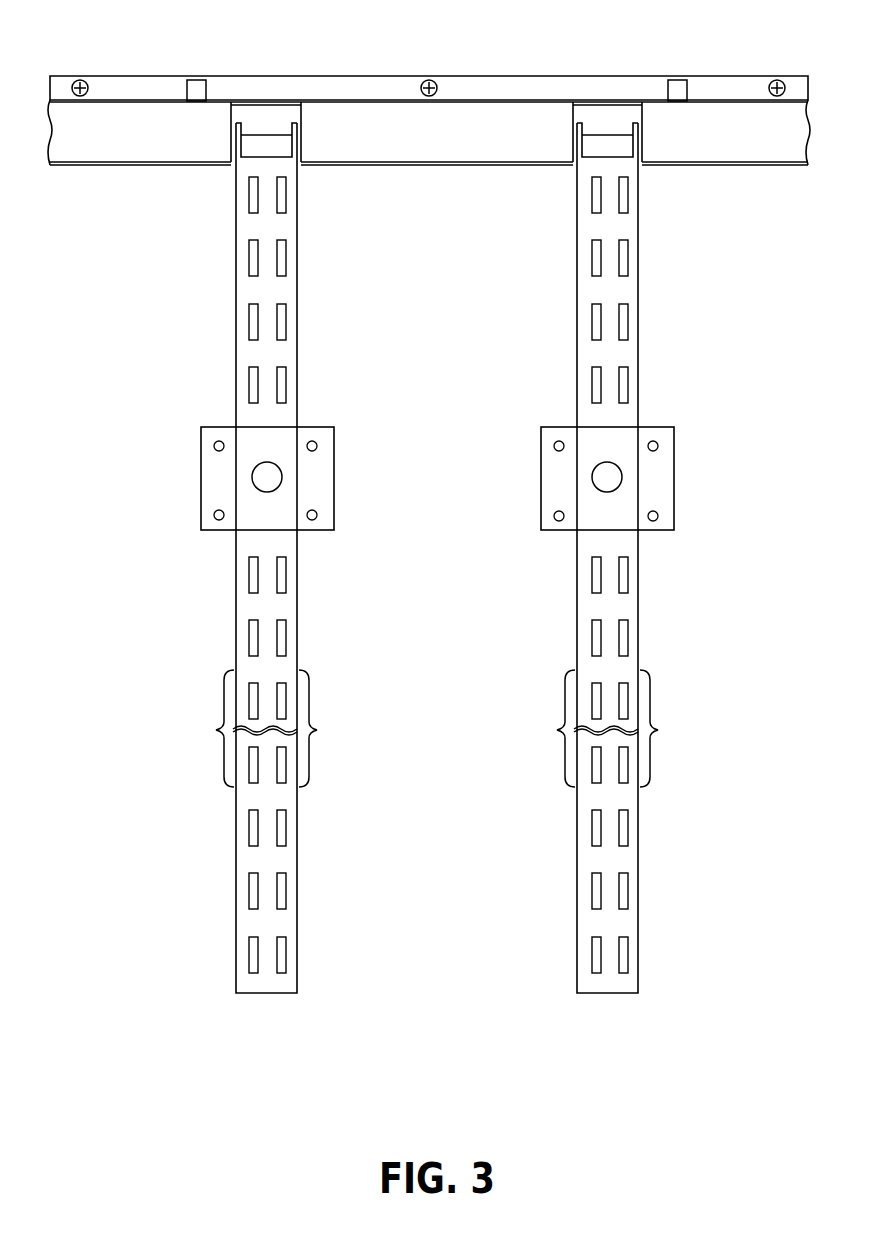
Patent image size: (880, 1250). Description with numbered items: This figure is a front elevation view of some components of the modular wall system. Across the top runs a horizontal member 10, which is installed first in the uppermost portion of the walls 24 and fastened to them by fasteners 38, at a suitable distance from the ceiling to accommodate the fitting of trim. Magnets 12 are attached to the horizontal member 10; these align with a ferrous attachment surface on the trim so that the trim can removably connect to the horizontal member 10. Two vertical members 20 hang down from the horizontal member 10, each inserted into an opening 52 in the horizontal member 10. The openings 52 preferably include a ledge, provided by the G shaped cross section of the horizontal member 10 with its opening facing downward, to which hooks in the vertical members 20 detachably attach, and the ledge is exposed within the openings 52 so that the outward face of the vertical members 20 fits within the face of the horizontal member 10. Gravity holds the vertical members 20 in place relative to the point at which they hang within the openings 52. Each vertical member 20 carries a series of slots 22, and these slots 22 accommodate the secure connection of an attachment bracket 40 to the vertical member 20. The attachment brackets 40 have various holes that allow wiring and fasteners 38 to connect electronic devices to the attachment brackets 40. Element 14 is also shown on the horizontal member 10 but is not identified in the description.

The horizontal member 10 is at (477, 99).
The magnet 12 is at (153, 137).
The mounting block 14 is at (195, 88).
The vertical member 20 is at (284, 605).
The slot 22 is at (253, 325).
The wall 24 is at (416, 289).
The fastener 38 is at (80, 80).
The attachment bracket 40 is at (318, 482).
The opening 52 is at (265, 123).